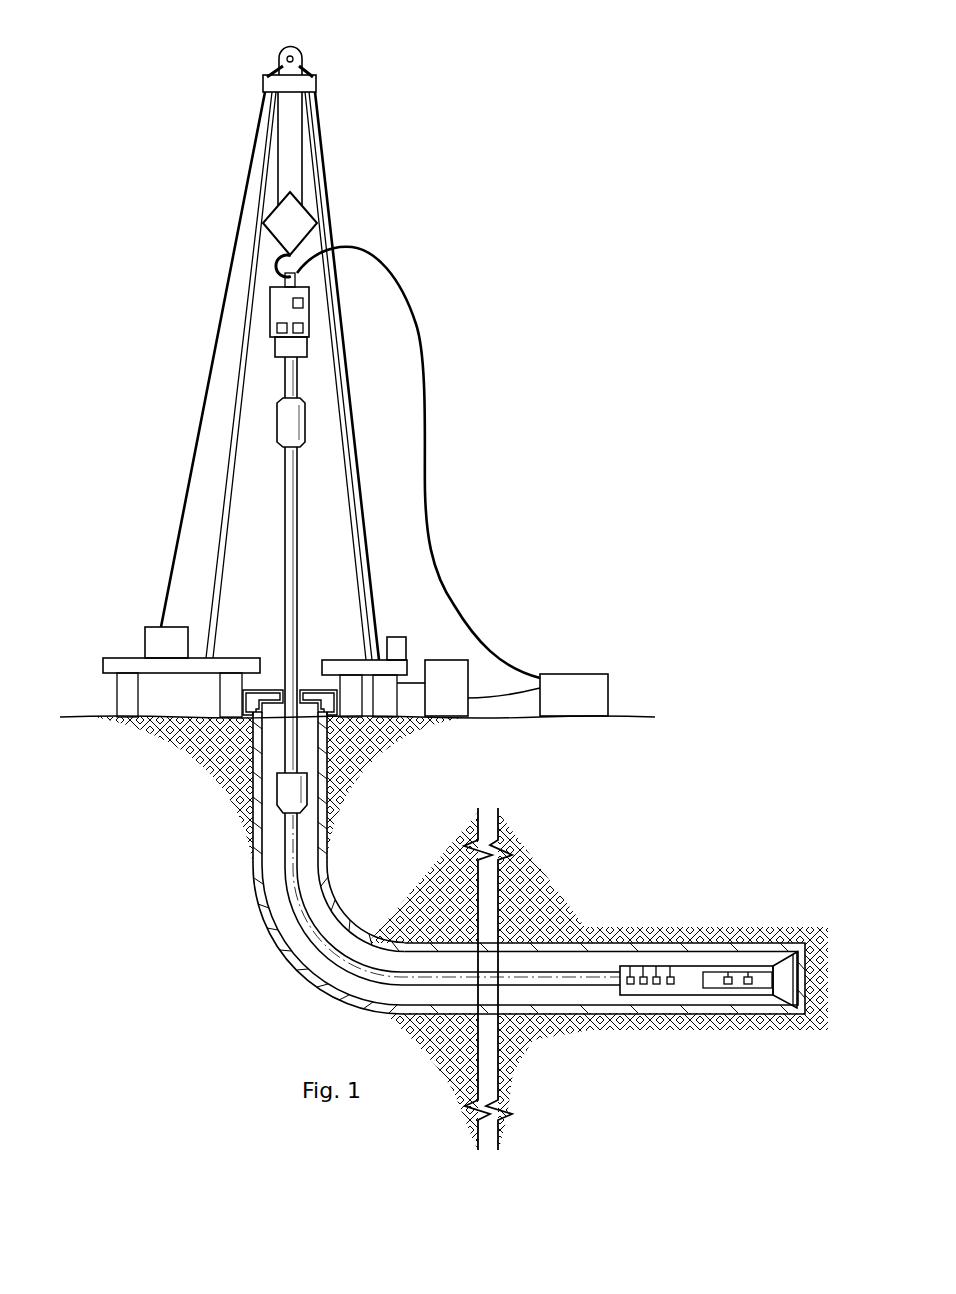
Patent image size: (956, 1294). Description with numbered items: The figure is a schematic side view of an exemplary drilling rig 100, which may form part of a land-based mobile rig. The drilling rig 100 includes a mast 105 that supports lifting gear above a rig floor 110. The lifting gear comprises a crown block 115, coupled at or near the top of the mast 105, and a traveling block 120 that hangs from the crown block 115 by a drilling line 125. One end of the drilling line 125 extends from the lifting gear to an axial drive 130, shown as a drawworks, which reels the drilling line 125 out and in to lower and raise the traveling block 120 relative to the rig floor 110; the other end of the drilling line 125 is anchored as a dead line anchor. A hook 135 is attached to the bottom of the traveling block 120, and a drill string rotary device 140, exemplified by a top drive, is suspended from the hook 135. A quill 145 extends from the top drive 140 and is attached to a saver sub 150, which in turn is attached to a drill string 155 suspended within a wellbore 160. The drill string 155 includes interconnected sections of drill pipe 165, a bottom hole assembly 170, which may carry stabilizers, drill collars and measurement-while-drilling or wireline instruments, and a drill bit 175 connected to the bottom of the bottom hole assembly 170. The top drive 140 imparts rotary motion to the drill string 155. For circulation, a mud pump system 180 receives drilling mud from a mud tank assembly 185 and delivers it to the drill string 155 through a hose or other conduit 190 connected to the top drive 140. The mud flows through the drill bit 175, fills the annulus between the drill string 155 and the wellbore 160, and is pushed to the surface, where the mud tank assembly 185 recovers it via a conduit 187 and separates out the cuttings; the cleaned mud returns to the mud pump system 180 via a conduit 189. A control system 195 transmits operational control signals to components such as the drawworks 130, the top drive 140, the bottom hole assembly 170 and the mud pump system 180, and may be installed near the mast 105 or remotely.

The drilling rig 100 is at (640, 116).
The mast 105 is at (324, 134).
The rig floor 110 is at (105, 663).
The crown block 115 is at (288, 44).
The traveling block 120 is at (318, 238).
The drilling line 125 is at (272, 136).
The axial drive 130 is at (145, 641).
The hook 135 is at (277, 260).
The drill string rotary device 140 is at (270, 312).
The quill 145 is at (285, 380).
The saver sub 150 is at (277, 420).
The drill string 155 is at (277, 493).
The wellbore 160 is at (276, 902).
The drill pipe 165 is at (498, 814).
The bottom hole assembly 170 is at (748, 1002).
The drill bit 175 is at (780, 958).
The mud pump system 180 is at (576, 674).
The mud tank assembly 185 is at (438, 660).
The conduit 187 is at (410, 687).
The conduit 189 is at (508, 695).
The hose or other conduit 190 is at (427, 417).
The control system 195 is at (398, 636).